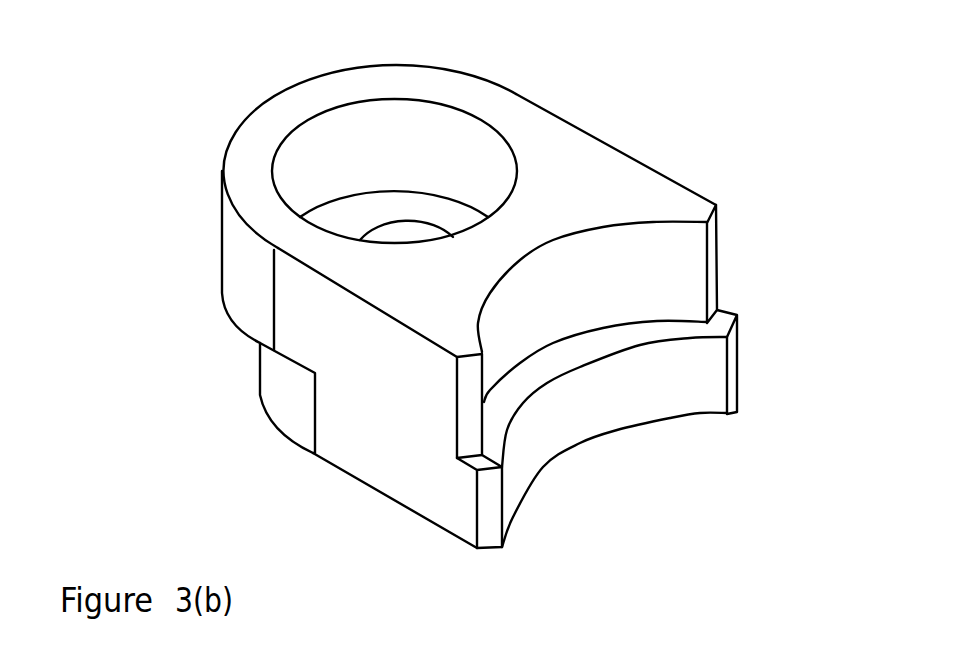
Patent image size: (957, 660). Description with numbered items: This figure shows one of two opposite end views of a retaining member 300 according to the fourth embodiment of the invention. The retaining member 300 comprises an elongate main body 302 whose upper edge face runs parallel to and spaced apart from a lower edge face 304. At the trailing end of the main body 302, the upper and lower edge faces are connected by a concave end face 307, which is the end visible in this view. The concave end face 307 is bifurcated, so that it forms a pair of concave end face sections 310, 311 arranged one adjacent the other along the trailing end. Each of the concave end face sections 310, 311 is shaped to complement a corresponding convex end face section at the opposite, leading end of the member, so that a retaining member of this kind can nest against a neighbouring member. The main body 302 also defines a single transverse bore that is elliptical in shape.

The retaining member 300 is at (496, 289).
The elongate main body 302 is at (627, 187).
The lower edge face 304 is at (280, 388).
The concave end face 307 is at (588, 443).
The concave end face section 310 is at (737, 372).
The concave end face section 311 is at (720, 258).